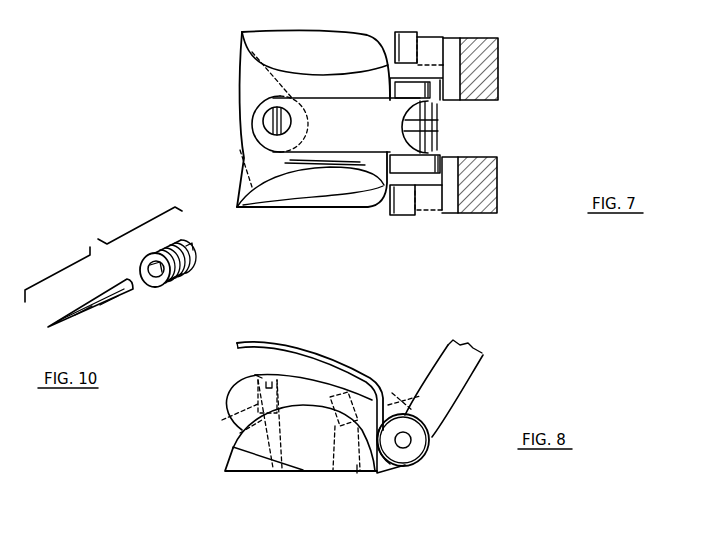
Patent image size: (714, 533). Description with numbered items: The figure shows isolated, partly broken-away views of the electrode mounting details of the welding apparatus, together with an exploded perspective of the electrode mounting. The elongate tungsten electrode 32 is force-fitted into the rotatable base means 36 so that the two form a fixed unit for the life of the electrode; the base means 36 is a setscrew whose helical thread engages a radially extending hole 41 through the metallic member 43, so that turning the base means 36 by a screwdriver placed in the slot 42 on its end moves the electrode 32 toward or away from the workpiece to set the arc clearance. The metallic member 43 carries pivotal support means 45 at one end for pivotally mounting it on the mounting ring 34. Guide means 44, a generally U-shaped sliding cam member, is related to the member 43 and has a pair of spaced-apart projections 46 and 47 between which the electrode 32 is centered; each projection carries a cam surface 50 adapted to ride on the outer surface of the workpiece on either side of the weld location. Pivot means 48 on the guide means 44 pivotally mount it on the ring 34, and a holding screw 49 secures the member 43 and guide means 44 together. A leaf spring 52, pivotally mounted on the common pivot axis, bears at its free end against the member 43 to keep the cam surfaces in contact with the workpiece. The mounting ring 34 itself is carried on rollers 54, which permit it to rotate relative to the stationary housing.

In FIG. 10, the tungsten electrode 32 is at (86, 316).
In FIG. 8, the tungsten electrode 32 is at (280, 478).
In FIG. 7, the mounting ring 34 is at (498, 68).
In FIG. 8, the mounting ring 34 is at (480, 378).
In FIG. 7, the rotatable base means 36 is at (262, 126).
In FIG. 10, the rotatable base means 36 is at (168, 285).
In FIG. 8, the rotatable base means 36 is at (236, 414).
In FIG. 8, the hole 41 is at (256, 376).
In FIG. 7, the slot 42 is at (291, 118).
In FIG. 10, the slot 42 is at (189, 249).
In FIG. 8, the slot 42 is at (280, 384).
In FIG. 7, the metallic member 43 is at (250, 80).
In FIG. 8, the metallic member 43 is at (340, 392).
In FIG. 8, the guide means 44 is at (225, 466).
In FIG. 7, the pivotal support means 45 is at (438, 128).
In FIG. 7, the projection 46 is at (316, 200).
In FIG. 8, the projection 46 is at (250, 462).
In FIG. 7, the projection 47 is at (280, 47).
In FIG. 7, the pivot means 48 is at (443, 108).
In FIG. 8, the holding screw 49 is at (340, 470).
In FIG. 8, the cam surface 50 is at (357, 482).
In FIG. 7, the leaf spring 52 is at (331, 125).
In FIG. 8, the leaf spring 52 is at (295, 346).
In FIG. 7, the roller 54 is at (416, 40).
In FIG. 8, the roller 54 is at (418, 452).